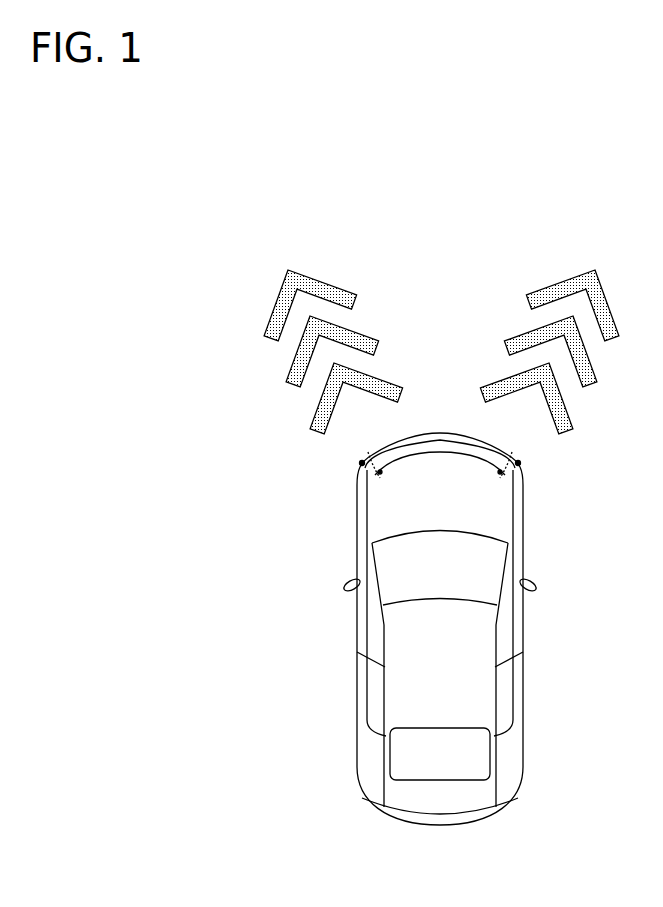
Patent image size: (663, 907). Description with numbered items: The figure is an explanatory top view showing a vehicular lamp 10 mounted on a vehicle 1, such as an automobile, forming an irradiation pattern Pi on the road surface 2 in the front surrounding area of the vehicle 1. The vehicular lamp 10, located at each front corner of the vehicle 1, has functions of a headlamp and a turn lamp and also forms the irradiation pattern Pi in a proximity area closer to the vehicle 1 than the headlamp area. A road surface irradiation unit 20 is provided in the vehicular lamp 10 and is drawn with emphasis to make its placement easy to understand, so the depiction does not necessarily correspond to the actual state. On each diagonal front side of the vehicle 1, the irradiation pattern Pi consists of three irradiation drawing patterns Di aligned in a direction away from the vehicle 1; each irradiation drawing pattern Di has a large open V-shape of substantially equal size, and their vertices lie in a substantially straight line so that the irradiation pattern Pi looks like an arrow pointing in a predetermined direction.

The vehicle 1 is at (538, 632).
The road surface 2 is at (441, 342).
The vehicular lamp 10 is at (360, 464).
The road surface irradiation unit 20 is at (352, 503).
The irradiation pattern Pi is at (350, 246).
The irradiation drawing pattern Di is at (258, 339).